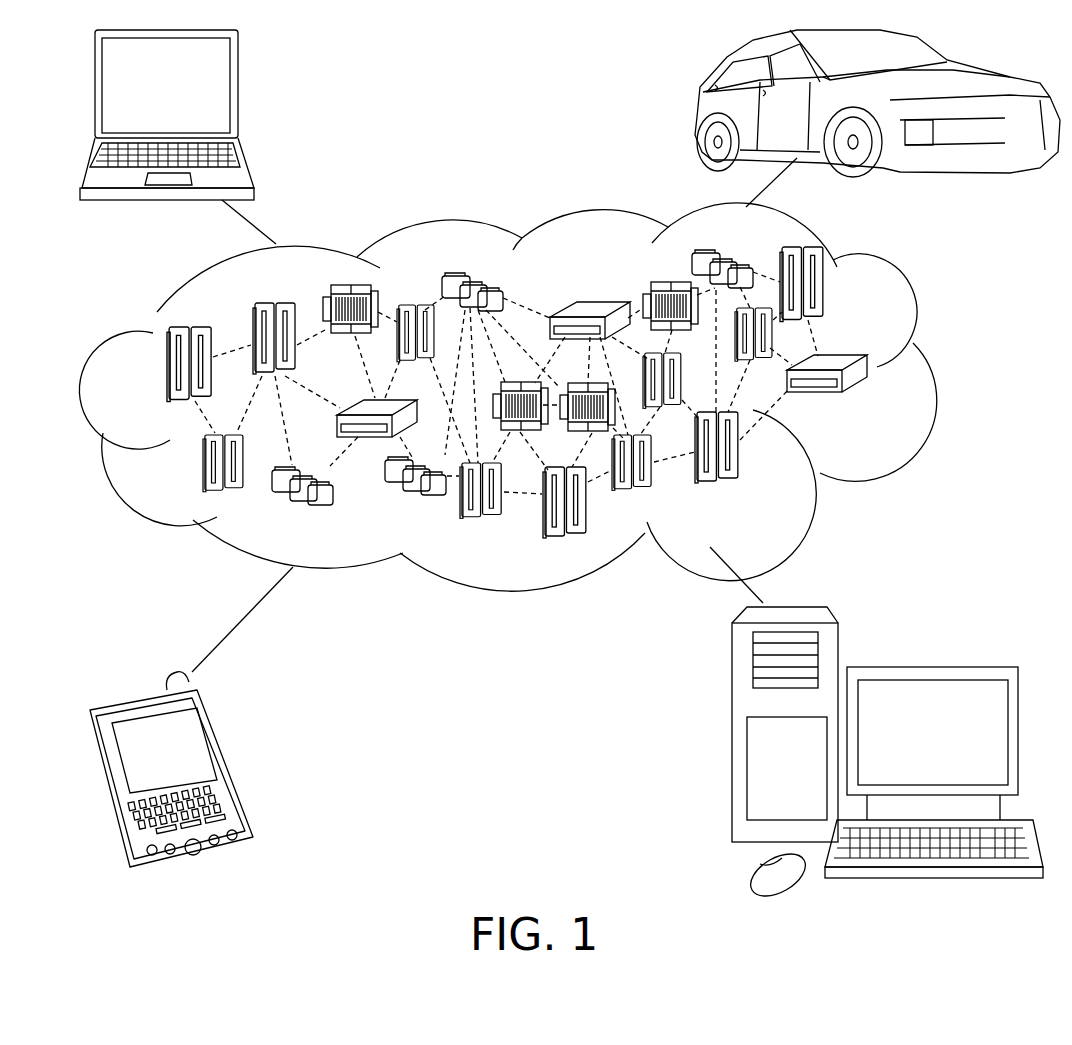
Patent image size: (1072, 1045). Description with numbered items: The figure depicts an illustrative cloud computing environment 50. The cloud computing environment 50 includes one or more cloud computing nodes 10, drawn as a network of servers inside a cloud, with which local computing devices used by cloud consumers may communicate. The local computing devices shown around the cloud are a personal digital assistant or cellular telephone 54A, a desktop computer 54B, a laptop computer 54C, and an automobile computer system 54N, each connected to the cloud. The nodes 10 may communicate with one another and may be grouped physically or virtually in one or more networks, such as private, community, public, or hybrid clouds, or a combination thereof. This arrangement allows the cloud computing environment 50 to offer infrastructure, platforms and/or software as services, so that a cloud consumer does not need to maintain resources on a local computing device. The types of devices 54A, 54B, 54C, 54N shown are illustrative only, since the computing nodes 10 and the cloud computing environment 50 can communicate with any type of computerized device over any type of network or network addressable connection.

The cloud computing node 10 is at (868, 402).
The cloud computing environment 50 is at (930, 372).
The personal digital assistant or cellular telephone 54A is at (227, 763).
The desktop computer 54B is at (929, 663).
The laptop computer 54C is at (240, 92).
The automobile computer system 54N is at (700, 107).